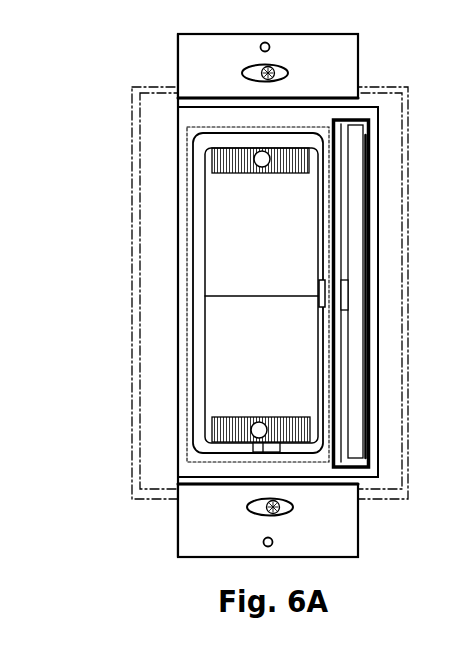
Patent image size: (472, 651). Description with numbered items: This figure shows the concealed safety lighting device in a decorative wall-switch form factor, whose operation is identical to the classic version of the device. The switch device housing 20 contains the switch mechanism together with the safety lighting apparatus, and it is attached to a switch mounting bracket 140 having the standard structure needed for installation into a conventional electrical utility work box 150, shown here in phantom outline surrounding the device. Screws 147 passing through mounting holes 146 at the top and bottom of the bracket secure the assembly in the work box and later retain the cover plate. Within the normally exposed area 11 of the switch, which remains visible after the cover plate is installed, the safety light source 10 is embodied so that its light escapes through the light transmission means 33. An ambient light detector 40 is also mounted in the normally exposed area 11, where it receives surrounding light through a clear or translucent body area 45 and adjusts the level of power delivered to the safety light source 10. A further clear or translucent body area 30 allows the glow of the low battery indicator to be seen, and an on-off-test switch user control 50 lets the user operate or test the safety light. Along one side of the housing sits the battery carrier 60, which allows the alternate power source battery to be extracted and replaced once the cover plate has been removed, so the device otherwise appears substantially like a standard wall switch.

The safety light source 10 is at (255, 163).
The normally exposed area of switch 11 is at (176, 296).
The switch device housing 20 is at (378, 413).
The clear or translucent body area 30 is at (324, 293).
The light transmission means 33 is at (213, 158).
The ambient light detector 40 is at (254, 427).
The clear or translucent body area 45 is at (257, 433).
The on-off-test switch user control 50 is at (256, 450).
The battery carrier 60 is at (356, 165).
The switch mounting bracket 140 is at (342, 508).
The mounting holes 146 is at (260, 47).
The screw 147 is at (248, 76).
The electrical utility work box 150 is at (364, 87).